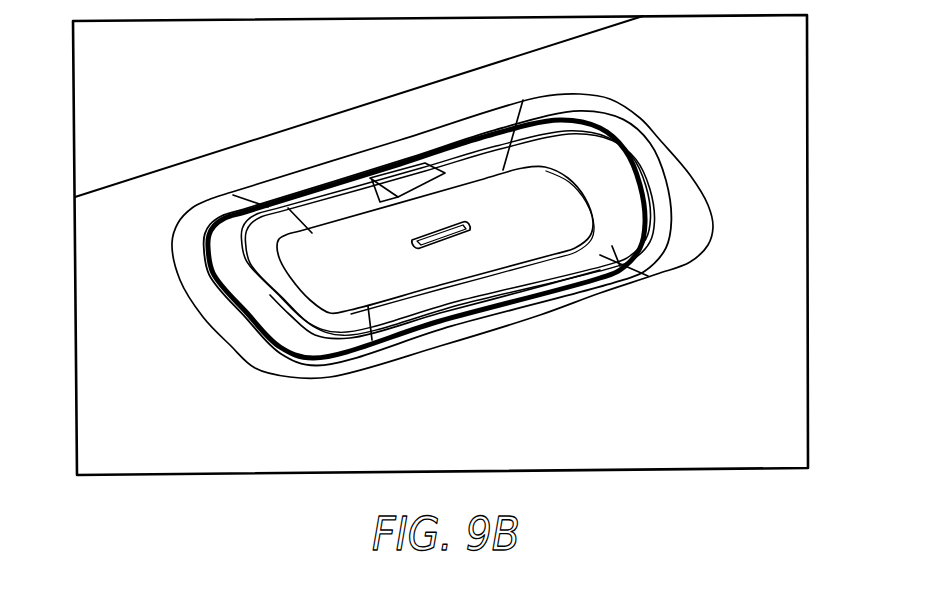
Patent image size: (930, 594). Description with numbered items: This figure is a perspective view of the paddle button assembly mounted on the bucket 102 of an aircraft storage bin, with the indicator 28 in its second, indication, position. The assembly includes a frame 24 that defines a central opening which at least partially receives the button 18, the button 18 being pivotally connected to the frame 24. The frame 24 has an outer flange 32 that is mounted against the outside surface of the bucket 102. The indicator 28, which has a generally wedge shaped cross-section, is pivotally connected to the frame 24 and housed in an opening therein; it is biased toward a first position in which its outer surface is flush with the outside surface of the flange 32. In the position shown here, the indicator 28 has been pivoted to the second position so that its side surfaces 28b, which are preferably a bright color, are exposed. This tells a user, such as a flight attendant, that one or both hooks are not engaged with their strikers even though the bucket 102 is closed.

The bucket 102 is at (667, 394).
The outer flange 32 is at (227, 257).
The frame 24 is at (464, 167).
The button 18 is at (547, 192).
The indicator 28 is at (408, 178).
The side surfaces 28b is at (395, 196).